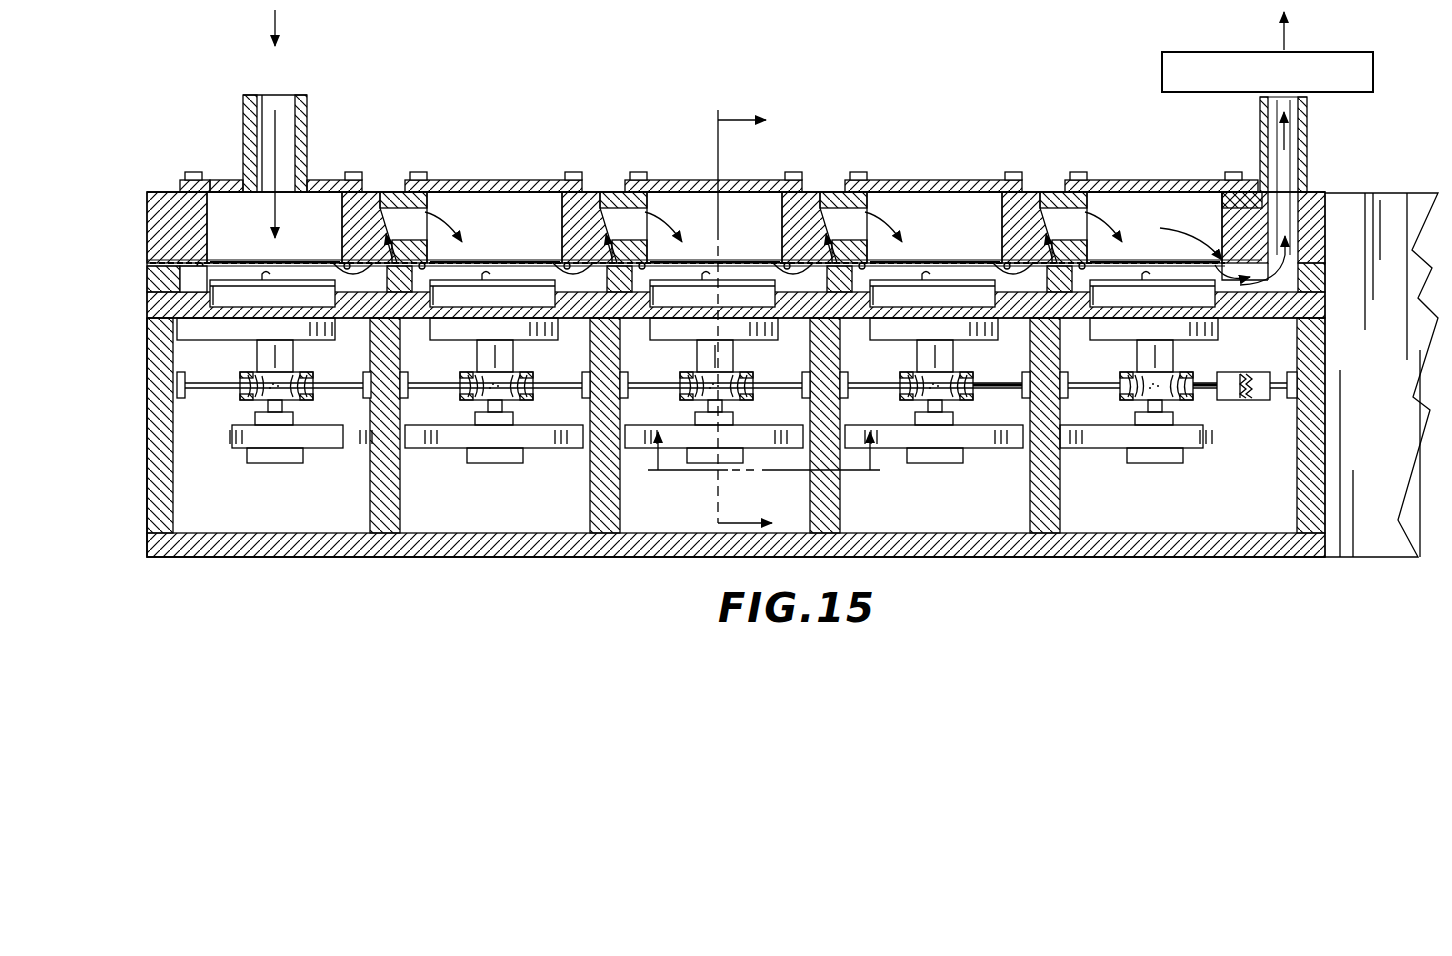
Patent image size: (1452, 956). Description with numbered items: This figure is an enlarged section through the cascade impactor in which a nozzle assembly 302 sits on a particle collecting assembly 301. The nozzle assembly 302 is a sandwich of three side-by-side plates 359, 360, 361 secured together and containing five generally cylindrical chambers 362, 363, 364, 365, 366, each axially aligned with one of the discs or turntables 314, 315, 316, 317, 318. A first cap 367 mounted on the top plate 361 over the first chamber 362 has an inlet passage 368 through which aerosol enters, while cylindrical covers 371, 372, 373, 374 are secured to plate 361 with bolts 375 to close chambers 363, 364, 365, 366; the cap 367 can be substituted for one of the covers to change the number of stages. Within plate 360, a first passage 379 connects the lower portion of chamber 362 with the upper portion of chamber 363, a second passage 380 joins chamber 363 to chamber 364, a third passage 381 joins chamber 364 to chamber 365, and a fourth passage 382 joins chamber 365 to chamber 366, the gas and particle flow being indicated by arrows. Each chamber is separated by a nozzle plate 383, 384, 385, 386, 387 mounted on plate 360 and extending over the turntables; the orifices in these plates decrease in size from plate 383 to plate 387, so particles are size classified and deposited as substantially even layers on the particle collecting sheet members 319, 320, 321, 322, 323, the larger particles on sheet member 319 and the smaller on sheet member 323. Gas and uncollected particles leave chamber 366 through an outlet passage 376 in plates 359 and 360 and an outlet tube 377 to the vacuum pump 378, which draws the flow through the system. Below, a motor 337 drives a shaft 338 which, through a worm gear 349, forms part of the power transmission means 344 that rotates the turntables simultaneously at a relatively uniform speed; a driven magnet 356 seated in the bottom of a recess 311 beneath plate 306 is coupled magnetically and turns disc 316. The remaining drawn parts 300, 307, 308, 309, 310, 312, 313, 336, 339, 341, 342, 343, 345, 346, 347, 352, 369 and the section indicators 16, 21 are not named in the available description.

The processing apparatus 300 is at (968, 100).
The particle collecting assembly 301 is at (135, 375).
The nozzle assembly 302 is at (138, 208).
The plate 306 is at (151, 312).
The bottom wall 307 is at (333, 555).
The partition walls 308 is at (1300, 517).
The substrate support 309 is at (205, 318).
The substrate support 310 is at (422, 318).
The recess 311 is at (642, 318).
The substrate support 312 is at (862, 318).
The substrate support 313 is at (1082, 318).
The turntable 314 is at (272, 295).
The turntable 315 is at (492, 295).
The disc 316 is at (712, 295).
The turntable 317 is at (932, 295).
The turntable 318 is at (1152, 295).
The particle collecting sheet member 319 is at (272, 290).
The particle collecting sheet member 320 is at (492, 290).
The particle collecting sheet member 321 is at (712, 290).
The particle collecting sheet member 322 is at (932, 290).
The particle collecting sheet member 323 is at (1152, 290).
The drive compartment 336 is at (241, 512).
The motor 337 is at (1381, 375).
The shaft 338 is at (988, 386).
The motor 339 is at (1242, 372).
The shaft 341 is at (1038, 398).
The worm gear 342 is at (262, 404).
The worm gear 343 is at (478, 400).
The power transmission means 344 is at (698, 400).
The worm gear 345 is at (918, 400).
The coupling 346 is at (1200, 398).
The support plate 347 is at (572, 454).
The worm gear 349 is at (548, 366).
The bottom block 352 is at (476, 468).
The driven magnet 356 is at (686, 330).
The plate 359 is at (151, 276).
The nozzle assembly plate 360 is at (151, 245).
The top plate 361 is at (187, 190).
The first chamber 362 is at (274, 227).
The second chamber 363 is at (493, 227).
The third chamber 364 is at (713, 227).
The fourth chamber 365 is at (933, 227).
The fifth chamber 366 is at (1153, 227).
The first cap 367 is at (230, 186).
The inlet passage 368 is at (284, 112).
The cover plate 369 is at (342, 178).
The cylindrical cover 371 is at (465, 179).
The cylindrical cover 372 is at (757, 179).
The cylindrical cover 373 is at (915, 179).
The cylindrical cover 374 is at (1116, 179).
The bolts 375 is at (1233, 173).
The outlet passage 376 is at (1305, 192).
The outlet tube 377 is at (1308, 132).
The vacuum pump 378 is at (1373, 74).
The first passage 379 is at (398, 222).
The second passage 380 is at (588, 215).
The third passage 381 is at (827, 215).
The fourth passage 382 is at (1040, 220).
The nozzle plate 383 is at (240, 260).
The nozzle plate 384 is at (529, 262).
The nozzle plate 385 is at (694, 260).
The nozzle plate 386 is at (982, 262).
The nozzle plate 387 is at (1194, 262).
The section line 16- 16 is at (717, 324).
The section line 21- 21 is at (759, 473).